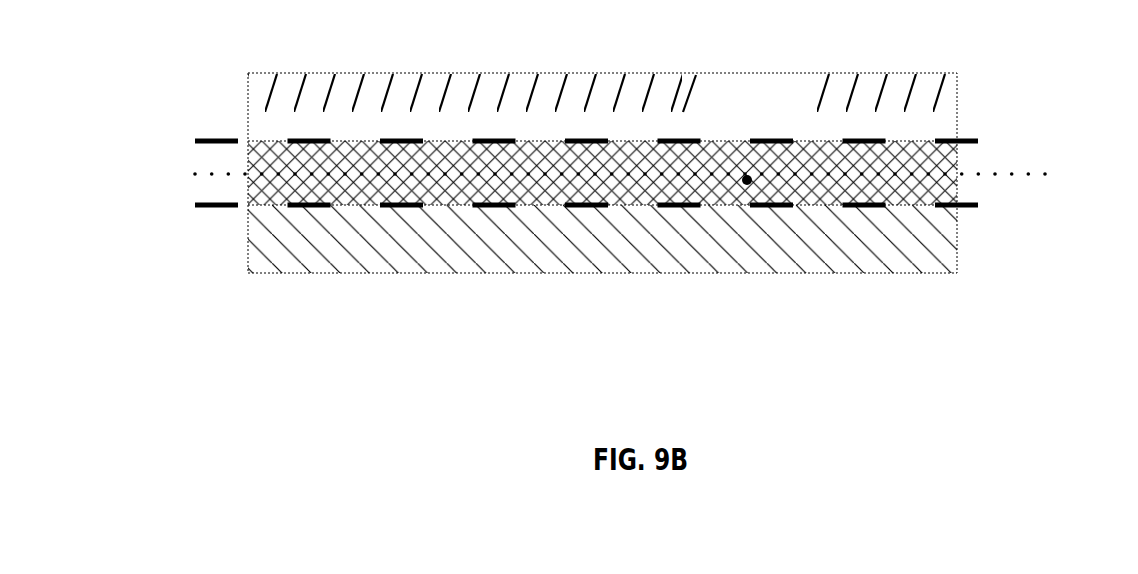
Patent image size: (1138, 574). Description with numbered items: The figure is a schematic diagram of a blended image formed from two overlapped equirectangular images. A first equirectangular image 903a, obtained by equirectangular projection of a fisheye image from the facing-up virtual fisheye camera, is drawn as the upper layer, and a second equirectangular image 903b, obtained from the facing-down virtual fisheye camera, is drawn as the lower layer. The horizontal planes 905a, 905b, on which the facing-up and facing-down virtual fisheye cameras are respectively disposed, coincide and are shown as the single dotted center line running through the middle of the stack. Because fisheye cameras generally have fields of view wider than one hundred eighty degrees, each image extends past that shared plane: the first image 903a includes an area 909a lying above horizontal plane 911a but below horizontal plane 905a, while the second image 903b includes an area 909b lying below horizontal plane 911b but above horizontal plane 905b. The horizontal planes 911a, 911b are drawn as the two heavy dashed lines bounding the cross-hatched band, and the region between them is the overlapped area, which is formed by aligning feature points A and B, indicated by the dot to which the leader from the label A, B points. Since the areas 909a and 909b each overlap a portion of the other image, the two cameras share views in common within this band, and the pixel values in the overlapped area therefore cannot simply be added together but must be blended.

The first equirectangular image 903a is at (602, 65).
The second equirectangular image 903b is at (602, 265).
The horizontal plane 905a is at (544, 171).
The horizontal plane 905b is at (544, 171).
The area 909a is at (580, 190).
The area 909b is at (685, 192).
The horizontal plane 911a is at (653, 211).
The horizontal plane 911b is at (651, 138).
The feature point A is at (851, 101).
The feature point B is at (747, 175).